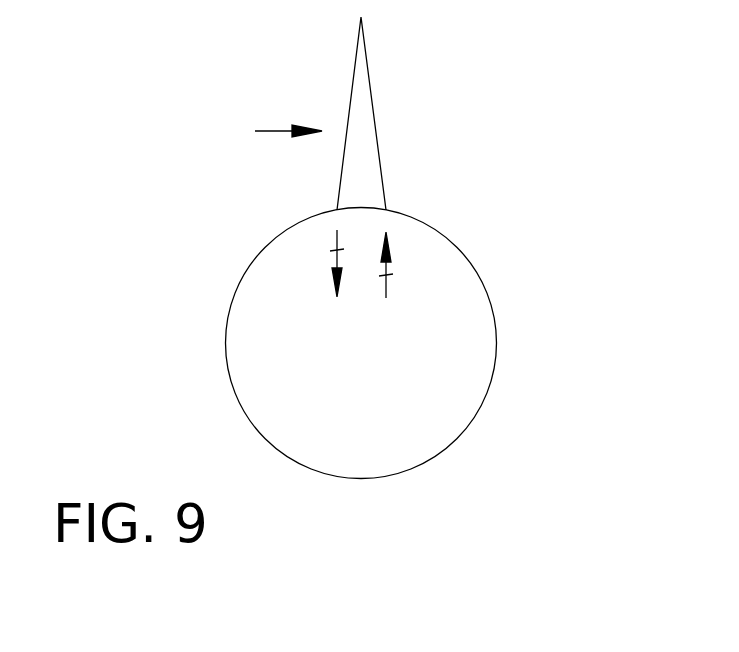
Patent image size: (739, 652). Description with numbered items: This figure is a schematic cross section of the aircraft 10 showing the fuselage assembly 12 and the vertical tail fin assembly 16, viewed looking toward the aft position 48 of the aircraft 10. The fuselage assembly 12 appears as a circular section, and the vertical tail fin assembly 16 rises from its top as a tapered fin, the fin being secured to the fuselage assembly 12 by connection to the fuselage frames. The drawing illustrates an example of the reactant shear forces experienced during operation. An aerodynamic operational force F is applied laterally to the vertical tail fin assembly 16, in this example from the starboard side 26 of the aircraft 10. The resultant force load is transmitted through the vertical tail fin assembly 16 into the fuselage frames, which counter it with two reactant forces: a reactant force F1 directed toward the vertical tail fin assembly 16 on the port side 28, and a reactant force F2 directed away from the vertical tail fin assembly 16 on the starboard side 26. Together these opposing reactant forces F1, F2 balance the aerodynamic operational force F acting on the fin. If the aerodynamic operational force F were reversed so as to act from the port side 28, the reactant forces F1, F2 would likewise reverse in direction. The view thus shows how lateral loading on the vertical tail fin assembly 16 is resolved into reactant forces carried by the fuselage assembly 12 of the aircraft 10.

The aircraft 10 is at (467, 182).
The fuselage assembly 12 is at (488, 288).
The vertical tail fin assembly 16 is at (372, 100).
The starboard side 26 is at (178, 352).
The port side 28 is at (581, 362).
The aft position 48 is at (331, 67).
The aerodynamic operational force F is at (272, 131).
The reactant force F1 is at (386, 275).
The reactant force F2 is at (328, 251).